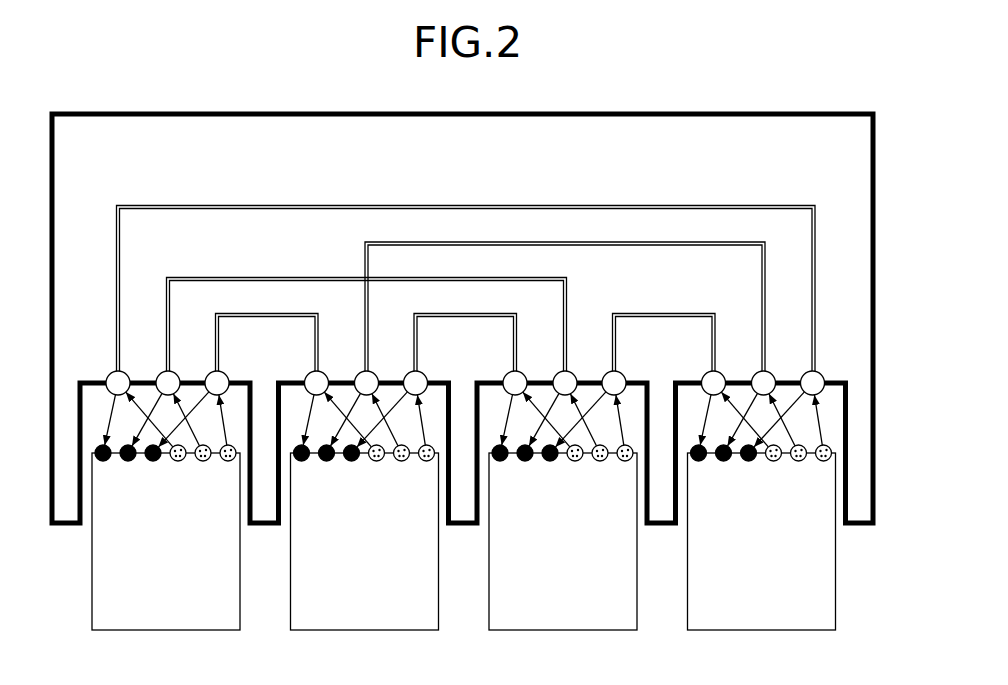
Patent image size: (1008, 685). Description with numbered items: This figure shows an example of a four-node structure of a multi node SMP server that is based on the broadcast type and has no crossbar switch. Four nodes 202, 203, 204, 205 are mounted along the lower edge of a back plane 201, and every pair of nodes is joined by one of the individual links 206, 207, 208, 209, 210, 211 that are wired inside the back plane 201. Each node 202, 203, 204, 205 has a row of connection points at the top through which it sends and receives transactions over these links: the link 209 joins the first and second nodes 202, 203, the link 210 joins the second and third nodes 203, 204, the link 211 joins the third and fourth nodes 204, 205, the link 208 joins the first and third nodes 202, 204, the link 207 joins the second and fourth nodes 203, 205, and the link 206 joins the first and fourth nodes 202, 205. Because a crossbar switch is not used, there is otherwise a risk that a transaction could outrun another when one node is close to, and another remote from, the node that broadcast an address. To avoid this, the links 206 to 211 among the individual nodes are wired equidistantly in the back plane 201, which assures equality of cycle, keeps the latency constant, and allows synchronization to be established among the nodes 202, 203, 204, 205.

The back plane 201 is at (565, 112).
The node 202 is at (167, 631).
The node 203 is at (365, 526).
The node 204 is at (563, 526).
The node 205 is at (762, 526).
The link 206 is at (616, 206).
The link 207 is at (600, 243).
The link 208 is at (220, 278).
The link 209 is at (255, 311).
The link 210 is at (452, 312).
The link 211 is at (651, 313).